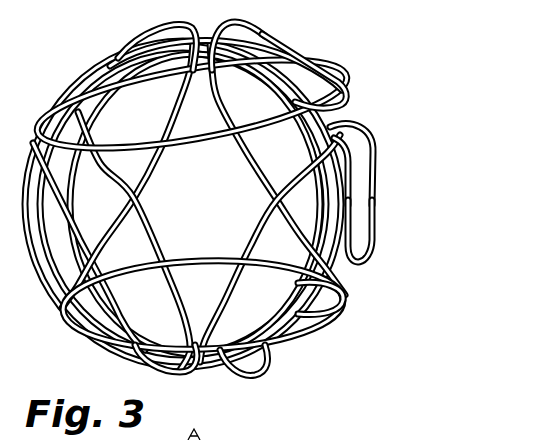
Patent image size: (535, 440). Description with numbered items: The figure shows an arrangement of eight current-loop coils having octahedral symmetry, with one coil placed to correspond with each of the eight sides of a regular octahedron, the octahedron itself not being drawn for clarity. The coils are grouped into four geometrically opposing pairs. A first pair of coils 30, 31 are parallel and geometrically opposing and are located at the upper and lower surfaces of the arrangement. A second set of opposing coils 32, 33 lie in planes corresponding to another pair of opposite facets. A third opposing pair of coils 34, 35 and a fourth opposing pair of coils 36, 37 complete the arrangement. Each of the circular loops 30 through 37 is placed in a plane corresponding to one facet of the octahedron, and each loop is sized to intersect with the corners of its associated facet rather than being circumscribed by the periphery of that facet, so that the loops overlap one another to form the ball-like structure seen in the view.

The coil 30 is at (336, 78).
The coil 31 is at (339, 322).
The coil 32 is at (374, 244).
The coil 33 is at (147, 228).
The coil 34 is at (368, 132).
The coil 35 is at (153, 37).
The coil 36 is at (125, 93).
The coil 37 is at (55, 108).